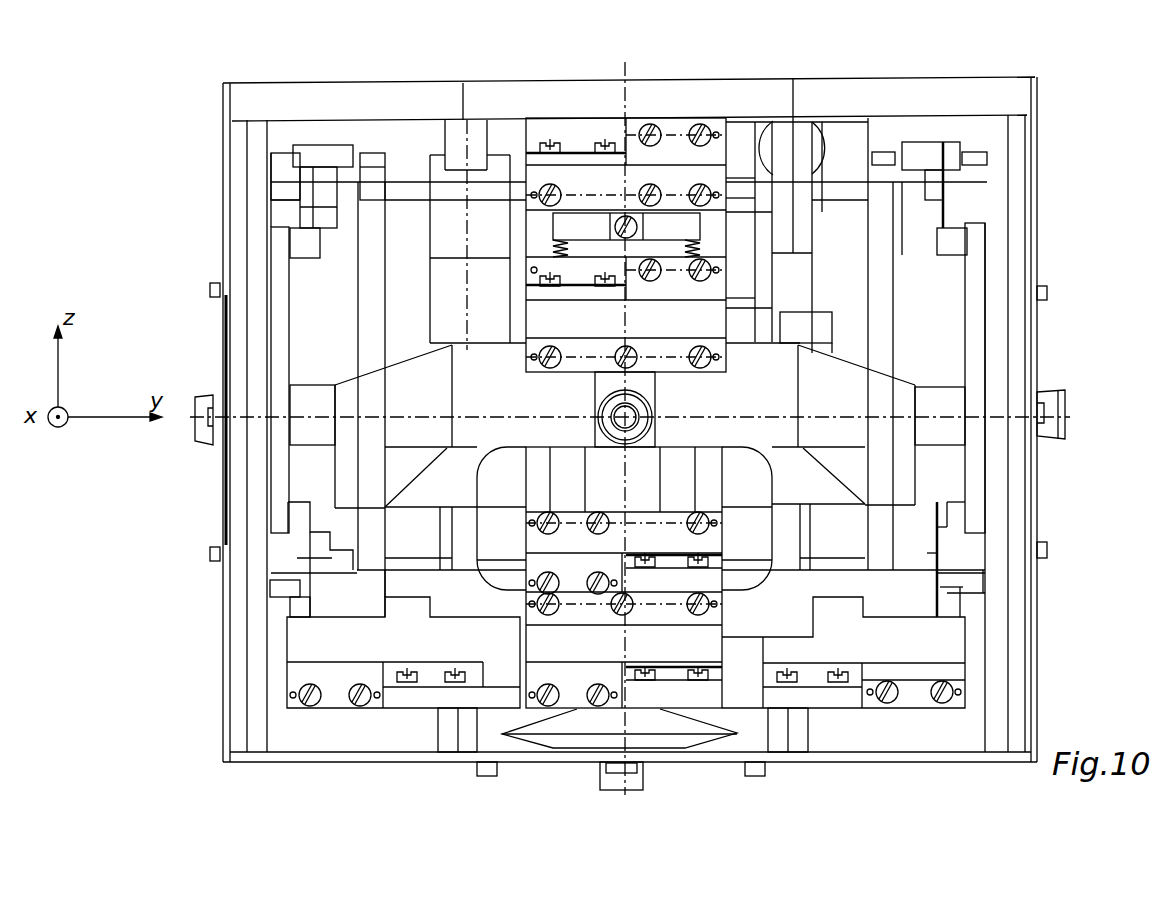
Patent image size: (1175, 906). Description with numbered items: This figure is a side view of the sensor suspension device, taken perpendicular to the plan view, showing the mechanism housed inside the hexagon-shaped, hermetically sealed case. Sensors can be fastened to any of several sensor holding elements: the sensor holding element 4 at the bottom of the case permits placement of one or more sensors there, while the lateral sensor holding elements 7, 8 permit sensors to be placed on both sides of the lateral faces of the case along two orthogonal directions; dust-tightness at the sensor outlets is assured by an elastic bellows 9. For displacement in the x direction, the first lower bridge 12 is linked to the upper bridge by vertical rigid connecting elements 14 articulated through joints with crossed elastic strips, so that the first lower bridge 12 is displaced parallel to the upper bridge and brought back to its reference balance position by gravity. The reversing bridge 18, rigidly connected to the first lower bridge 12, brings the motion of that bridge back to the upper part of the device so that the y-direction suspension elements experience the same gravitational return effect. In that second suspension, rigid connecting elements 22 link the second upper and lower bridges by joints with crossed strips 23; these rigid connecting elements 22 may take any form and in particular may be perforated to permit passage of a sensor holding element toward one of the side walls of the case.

The sensor holding element 4 is at (633, 777).
The sensor holding element 7 is at (945, 402).
The sensor holding element 8 is at (307, 432).
The elastic bellows 9 is at (588, 727).
The first lower bridge 12 is at (420, 587).
The vertical rigid connecting element 14 is at (712, 472).
The reversing bridge 18 is at (370, 280).
The rigid connecting element 22 is at (280, 332).
The joint with crossed strips 23 is at (310, 200).